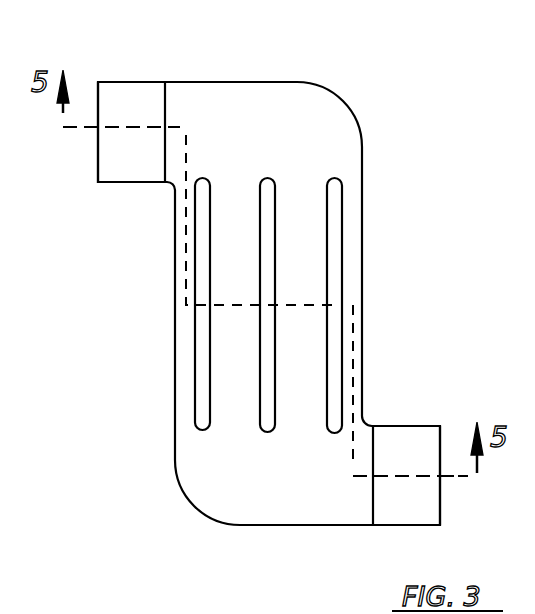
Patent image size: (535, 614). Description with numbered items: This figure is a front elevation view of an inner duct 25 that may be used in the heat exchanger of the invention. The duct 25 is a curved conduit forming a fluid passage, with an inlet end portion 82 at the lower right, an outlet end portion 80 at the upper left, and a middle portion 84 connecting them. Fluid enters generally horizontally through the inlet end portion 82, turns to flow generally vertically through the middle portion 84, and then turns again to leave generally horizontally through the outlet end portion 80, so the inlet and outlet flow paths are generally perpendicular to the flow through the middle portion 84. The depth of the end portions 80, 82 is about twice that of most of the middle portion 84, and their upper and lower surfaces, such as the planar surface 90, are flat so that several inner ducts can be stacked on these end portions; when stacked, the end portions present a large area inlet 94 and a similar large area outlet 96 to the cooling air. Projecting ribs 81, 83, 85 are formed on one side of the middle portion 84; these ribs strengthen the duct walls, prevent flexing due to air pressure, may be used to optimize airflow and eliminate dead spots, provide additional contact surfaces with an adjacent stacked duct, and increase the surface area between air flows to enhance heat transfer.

The inner duct 25 is at (257, 70).
The outlet end portion 80 is at (128, 78).
The projecting rib 81 is at (201, 181).
The inlet end portion 82 is at (435, 420).
The projecting rib 83 is at (259, 181).
The middle portion 84 is at (366, 245).
The projecting rib 85 is at (330, 181).
The planar surface of end portion 90 is at (390, 440).
The inlet 94 is at (440, 500).
The outlet 96 is at (95, 138).